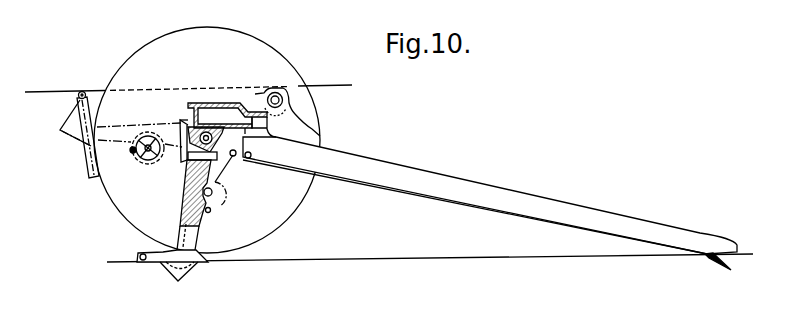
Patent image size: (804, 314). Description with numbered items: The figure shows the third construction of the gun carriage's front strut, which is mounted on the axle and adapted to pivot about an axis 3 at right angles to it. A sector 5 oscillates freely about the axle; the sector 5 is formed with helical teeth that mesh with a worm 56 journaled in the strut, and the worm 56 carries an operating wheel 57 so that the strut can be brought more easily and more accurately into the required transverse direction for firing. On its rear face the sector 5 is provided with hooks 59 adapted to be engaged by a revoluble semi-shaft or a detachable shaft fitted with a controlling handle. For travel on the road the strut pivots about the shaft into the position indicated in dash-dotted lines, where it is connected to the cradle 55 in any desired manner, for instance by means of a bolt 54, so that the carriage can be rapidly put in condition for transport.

The axis 3 is at (200, 154).
The sector 5 is at (219, 192).
The bolt 54 is at (83, 91).
The cradle 55 is at (53, 88).
The worm 56 is at (211, 212).
The operating wheel 57 is at (198, 205).
The hooks 59 is at (235, 157).